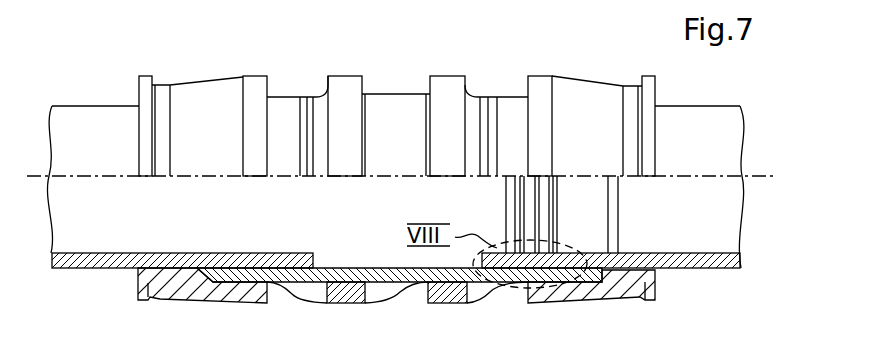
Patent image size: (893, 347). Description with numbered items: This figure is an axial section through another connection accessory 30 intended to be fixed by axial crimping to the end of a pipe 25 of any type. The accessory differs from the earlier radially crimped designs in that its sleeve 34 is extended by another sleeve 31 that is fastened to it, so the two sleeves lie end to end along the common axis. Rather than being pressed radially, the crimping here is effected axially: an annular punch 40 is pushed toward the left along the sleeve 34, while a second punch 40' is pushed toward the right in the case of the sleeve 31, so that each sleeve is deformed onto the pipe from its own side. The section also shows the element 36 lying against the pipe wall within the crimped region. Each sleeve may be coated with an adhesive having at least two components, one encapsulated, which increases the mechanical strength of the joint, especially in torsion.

The pipe 25 is at (722, 268).
The connection accessory 30 is at (462, 75).
The sleeve 31 is at (291, 97).
The sleeve 34 is at (517, 97).
The inner tube 36 is at (97, 268).
The annular punch 40 is at (619, 299).
The punch 40' is at (141, 97).